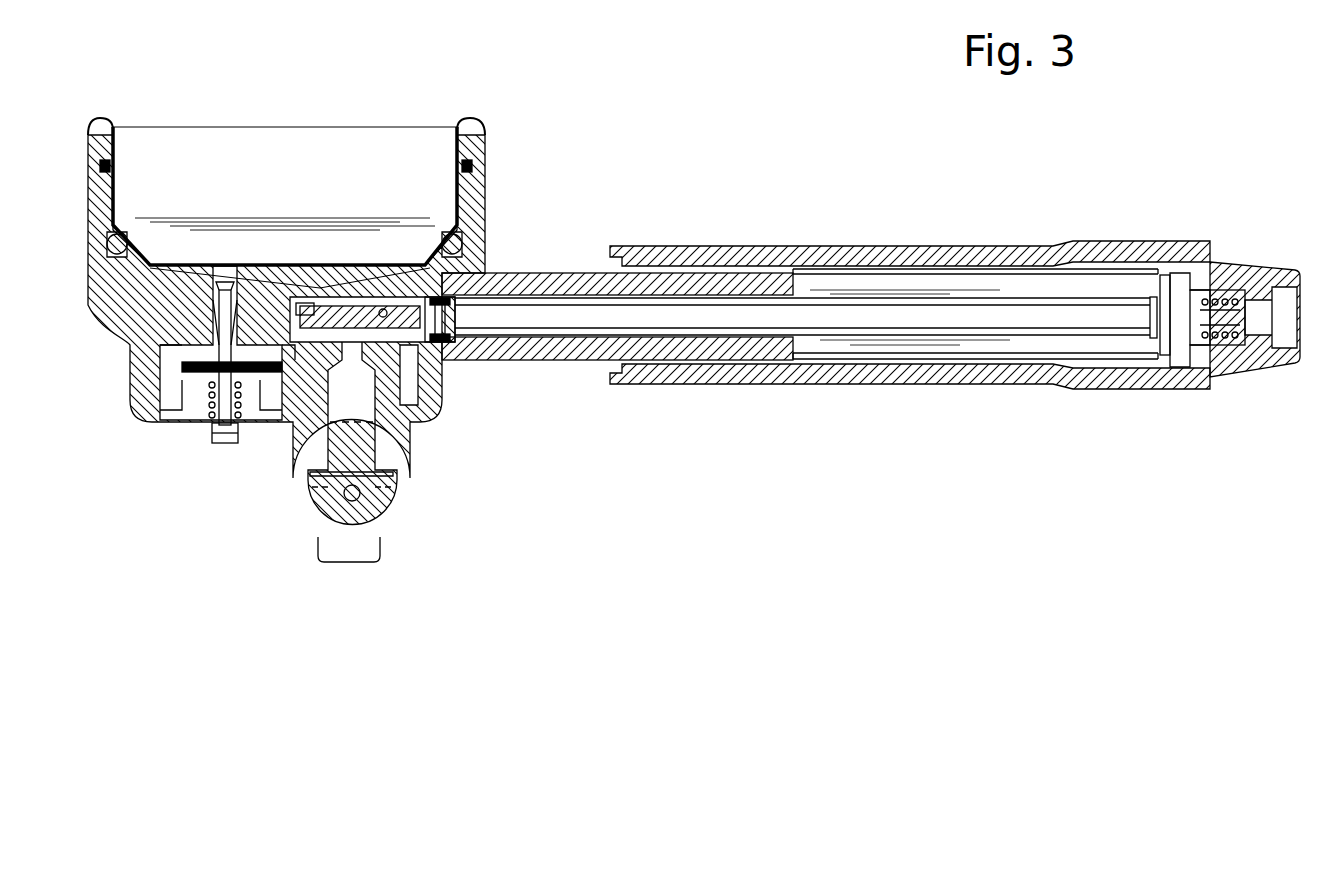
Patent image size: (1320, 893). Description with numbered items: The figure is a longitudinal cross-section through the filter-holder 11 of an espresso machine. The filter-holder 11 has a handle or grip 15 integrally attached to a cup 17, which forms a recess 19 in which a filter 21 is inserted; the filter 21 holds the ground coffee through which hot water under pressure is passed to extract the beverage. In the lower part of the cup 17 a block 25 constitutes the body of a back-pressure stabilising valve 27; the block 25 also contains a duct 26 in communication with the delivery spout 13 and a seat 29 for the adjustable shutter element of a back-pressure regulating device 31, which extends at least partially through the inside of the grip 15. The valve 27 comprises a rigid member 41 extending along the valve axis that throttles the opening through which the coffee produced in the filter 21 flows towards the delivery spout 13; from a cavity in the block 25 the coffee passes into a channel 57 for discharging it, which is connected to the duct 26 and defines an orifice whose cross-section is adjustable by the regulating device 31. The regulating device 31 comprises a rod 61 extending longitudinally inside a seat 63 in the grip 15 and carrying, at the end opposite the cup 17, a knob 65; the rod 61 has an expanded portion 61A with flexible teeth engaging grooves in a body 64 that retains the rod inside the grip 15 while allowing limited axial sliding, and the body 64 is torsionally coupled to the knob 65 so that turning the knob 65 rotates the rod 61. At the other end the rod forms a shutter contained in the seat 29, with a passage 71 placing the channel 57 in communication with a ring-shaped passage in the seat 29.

The filter-holder 11 is at (732, 226).
The delivery spout 13 is at (368, 552).
The handle or grip 15 is at (732, 377).
The cup 17 is at (482, 214).
The recess 19 is at (208, 278).
The filter 21 is at (185, 155).
The block 25 is at (172, 308).
The duct 26 is at (362, 440).
The back-pressure stabilising valve 27 is at (233, 455).
The seat 29 is at (383, 305).
The back-pressure regulating device 31 is at (1118, 298).
The rigid member 41 is at (222, 444).
The channel 57 is at (258, 312).
The rod 61 is at (940, 318).
The expanded portion 61A is at (1173, 352).
The seat 63 is at (546, 327).
The body 64 is at (1205, 363).
The knob 65 is at (1233, 260).
The passage 71 is at (308, 300).